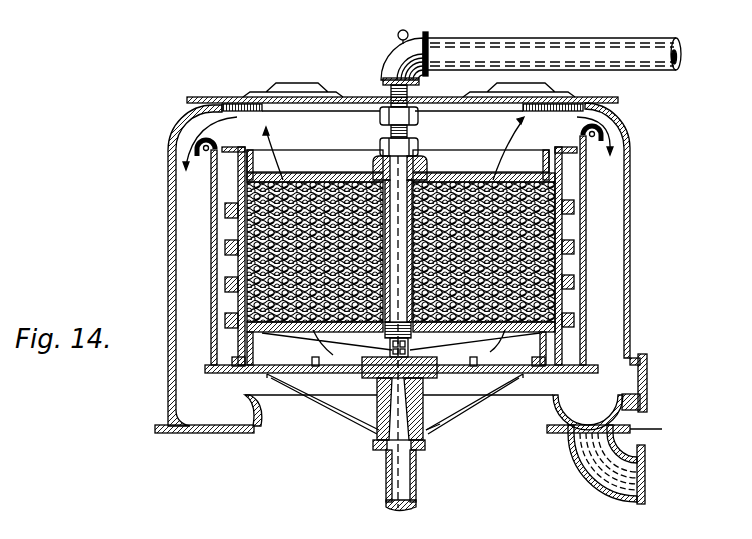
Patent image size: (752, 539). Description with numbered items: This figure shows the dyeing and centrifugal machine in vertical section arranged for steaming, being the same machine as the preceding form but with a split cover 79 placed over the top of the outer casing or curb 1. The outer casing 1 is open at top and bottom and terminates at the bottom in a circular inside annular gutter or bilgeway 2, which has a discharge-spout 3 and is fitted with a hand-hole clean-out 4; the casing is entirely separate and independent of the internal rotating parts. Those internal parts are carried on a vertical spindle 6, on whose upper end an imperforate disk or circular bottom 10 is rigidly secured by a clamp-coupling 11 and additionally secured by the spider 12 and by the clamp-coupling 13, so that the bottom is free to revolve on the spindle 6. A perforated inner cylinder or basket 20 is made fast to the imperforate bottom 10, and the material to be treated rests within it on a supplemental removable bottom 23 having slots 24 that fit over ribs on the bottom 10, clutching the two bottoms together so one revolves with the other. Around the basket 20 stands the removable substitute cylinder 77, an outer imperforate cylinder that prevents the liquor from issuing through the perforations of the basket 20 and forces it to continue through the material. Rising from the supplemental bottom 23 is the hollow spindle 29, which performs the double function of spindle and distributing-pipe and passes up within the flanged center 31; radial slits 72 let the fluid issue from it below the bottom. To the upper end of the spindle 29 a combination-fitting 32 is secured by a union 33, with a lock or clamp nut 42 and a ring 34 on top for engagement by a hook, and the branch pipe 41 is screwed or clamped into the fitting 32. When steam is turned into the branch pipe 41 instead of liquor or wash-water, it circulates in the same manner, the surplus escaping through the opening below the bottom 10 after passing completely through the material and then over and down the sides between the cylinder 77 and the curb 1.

The outer casing or curb 1 is at (167, 330).
The annular gutter or bilgeway 2 is at (410, 411).
The discharge-spout 3 is at (611, 464).
The hand-hole clean-out 4 is at (644, 383).
The vertical spindle 6 is at (385, 484).
The imperforate disk or circular bottom 10 is at (474, 404).
The clamp-coupling 11 is at (383, 401).
The spider 12 is at (447, 421).
The clamp-coupling 13 is at (421, 452).
The perforated inner cylinder or basket 20 is at (560, 231).
The supplemental removable bottom 23 is at (284, 328).
The slots 24 is at (312, 360).
The spindle and distributing-pipe 29 is at (388, 170).
The flanged center 31 is at (429, 166).
The combination-fitting 32 is at (386, 63).
The union 33 is at (381, 115).
The ring 34 is at (398, 36).
The supply pipe 41 is at (552, 44).
The lock or clamp nut 42 is at (418, 141).
The slits 72 is at (363, 375).
The substitute cylinder 77 is at (207, 270).
The split cover 79 is at (251, 97).